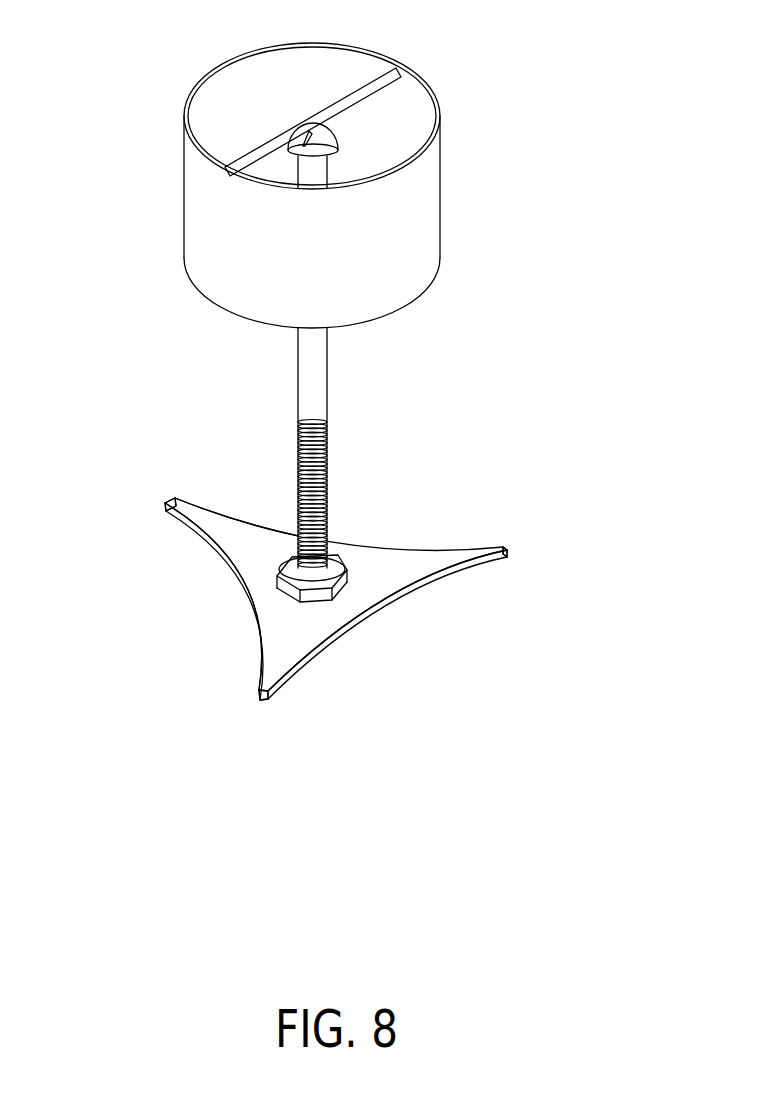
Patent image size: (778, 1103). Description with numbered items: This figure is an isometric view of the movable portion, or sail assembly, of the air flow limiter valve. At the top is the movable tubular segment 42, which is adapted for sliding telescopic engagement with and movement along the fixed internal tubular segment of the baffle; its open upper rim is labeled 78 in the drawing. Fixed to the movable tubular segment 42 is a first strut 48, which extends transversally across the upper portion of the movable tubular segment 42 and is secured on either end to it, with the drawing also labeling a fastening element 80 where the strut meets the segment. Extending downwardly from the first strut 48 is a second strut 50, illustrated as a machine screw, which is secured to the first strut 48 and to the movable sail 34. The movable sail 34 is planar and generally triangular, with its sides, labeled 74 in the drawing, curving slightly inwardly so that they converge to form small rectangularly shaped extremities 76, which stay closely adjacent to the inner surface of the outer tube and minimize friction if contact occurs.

The movable sail 34 is at (271, 605).
The movable tubular segment 42 is at (418, 220).
The first strut 48 is at (370, 85).
The second strut 50 is at (313, 372).
The arm 74 is at (223, 565).
The rectangular extremities 76 is at (170, 498).
The rim 78 is at (438, 106).
The screw 80 is at (228, 175).